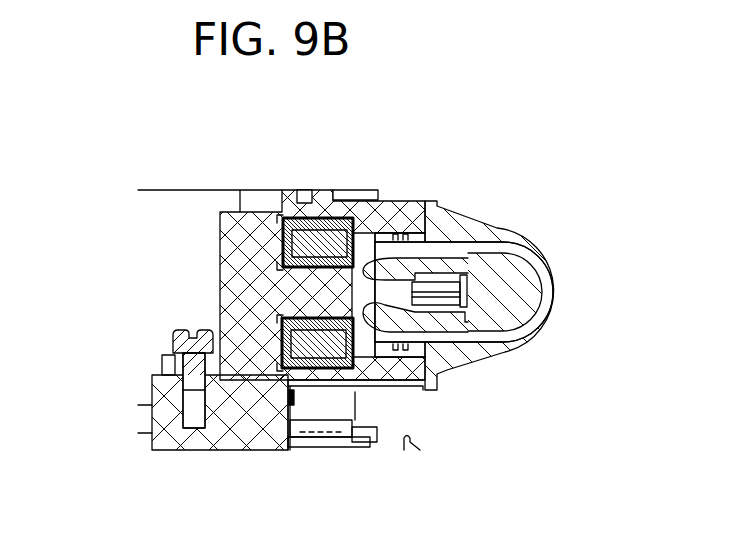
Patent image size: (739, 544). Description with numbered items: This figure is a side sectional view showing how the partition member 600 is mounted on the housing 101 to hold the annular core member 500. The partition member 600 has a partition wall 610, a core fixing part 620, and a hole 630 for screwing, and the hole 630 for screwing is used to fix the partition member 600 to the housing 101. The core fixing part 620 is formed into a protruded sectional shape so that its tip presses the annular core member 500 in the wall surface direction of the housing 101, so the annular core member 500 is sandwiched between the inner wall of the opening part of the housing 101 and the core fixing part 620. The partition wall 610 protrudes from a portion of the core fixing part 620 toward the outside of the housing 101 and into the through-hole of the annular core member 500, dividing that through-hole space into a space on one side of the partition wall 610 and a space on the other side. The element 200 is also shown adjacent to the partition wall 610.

The partition member 600 is at (240, 214).
The annular core member 500 is at (318, 220).
The partition wall 610 is at (403, 206).
The core fixing part 620 is at (269, 239).
The mating connector 200 is at (541, 348).
The housing 101 is at (258, 438).
The hole for screwing 630 is at (153, 377).